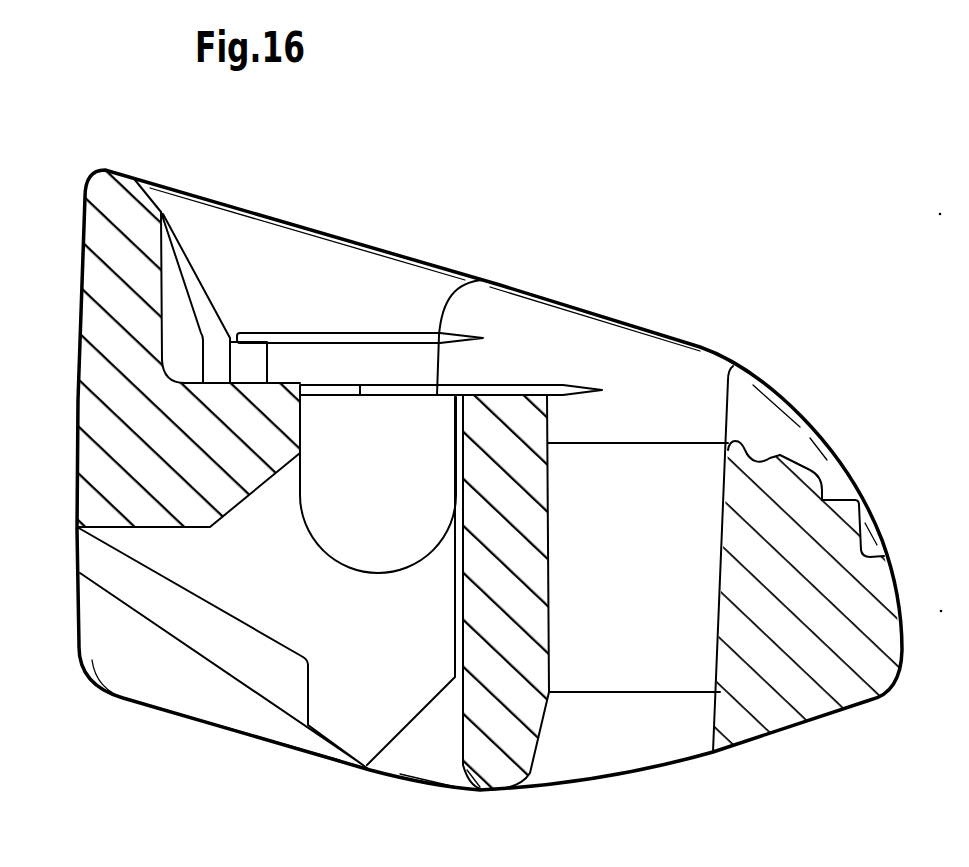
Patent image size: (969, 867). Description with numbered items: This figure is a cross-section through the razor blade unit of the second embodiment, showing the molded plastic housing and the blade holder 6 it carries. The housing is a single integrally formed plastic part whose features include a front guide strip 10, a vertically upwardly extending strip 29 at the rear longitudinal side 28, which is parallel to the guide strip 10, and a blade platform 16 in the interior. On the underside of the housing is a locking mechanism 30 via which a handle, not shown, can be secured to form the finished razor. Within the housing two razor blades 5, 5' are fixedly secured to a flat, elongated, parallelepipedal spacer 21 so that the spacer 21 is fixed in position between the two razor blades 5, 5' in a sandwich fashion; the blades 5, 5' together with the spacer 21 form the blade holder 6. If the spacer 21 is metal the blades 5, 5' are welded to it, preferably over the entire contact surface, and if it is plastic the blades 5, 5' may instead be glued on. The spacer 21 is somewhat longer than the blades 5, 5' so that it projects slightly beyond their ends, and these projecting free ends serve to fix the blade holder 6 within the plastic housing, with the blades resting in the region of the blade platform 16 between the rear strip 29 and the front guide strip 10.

The vertically upwardly extending strip 29 is at (110, 240).
The rear longitudinal side 28 is at (80, 357).
The blade holder 6 is at (266, 358).
The razor blade 5 is at (360, 309).
The spacer 21 is at (397, 367).
The razor blade 5' is at (451, 356).
The blade platform 16 is at (483, 398).
The front guide strip 10 is at (830, 497).
The locking mechanism 30 is at (228, 660).